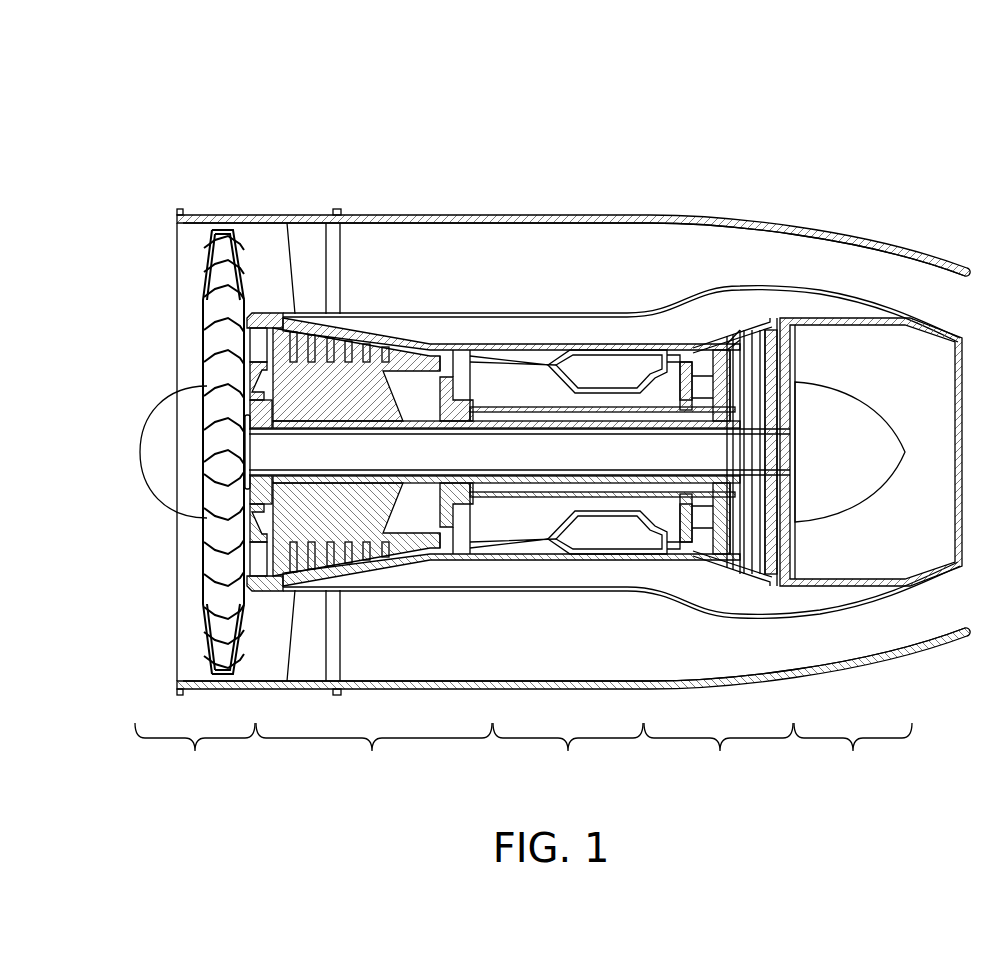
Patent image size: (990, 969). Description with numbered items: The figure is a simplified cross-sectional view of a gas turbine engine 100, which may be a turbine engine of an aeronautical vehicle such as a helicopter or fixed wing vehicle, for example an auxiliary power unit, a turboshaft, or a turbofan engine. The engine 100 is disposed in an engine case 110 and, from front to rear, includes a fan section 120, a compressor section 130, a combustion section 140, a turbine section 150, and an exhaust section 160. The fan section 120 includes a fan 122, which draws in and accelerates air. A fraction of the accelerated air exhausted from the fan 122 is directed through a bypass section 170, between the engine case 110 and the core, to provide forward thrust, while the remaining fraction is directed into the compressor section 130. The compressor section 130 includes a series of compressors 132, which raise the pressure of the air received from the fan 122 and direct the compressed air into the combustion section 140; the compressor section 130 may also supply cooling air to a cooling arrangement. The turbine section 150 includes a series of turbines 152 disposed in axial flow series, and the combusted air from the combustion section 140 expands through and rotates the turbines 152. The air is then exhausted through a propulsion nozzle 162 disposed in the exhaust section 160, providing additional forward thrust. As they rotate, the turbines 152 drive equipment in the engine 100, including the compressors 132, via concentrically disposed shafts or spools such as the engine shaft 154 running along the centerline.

The gas turbine engine 100 is at (391, 118).
The engine case 110 is at (393, 215).
The fan section 120 is at (195, 754).
The fan 122 is at (203, 553).
The compressor section 130 is at (374, 754).
The compressors 132 is at (400, 584).
The combustion section 140 is at (568, 754).
The turbine section 150 is at (718, 754).
The turbines 152 is at (720, 592).
The engine shaft 154 is at (257, 455).
The exhaust section 160 is at (853, 754).
The propulsion nozzle 162 is at (862, 330).
The bypass section 170 is at (490, 238).